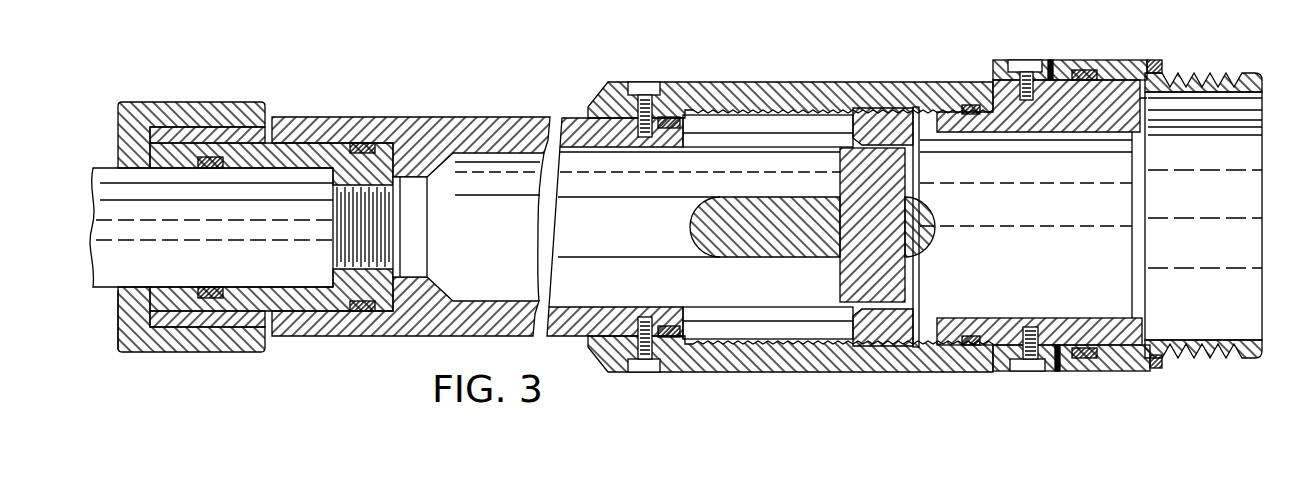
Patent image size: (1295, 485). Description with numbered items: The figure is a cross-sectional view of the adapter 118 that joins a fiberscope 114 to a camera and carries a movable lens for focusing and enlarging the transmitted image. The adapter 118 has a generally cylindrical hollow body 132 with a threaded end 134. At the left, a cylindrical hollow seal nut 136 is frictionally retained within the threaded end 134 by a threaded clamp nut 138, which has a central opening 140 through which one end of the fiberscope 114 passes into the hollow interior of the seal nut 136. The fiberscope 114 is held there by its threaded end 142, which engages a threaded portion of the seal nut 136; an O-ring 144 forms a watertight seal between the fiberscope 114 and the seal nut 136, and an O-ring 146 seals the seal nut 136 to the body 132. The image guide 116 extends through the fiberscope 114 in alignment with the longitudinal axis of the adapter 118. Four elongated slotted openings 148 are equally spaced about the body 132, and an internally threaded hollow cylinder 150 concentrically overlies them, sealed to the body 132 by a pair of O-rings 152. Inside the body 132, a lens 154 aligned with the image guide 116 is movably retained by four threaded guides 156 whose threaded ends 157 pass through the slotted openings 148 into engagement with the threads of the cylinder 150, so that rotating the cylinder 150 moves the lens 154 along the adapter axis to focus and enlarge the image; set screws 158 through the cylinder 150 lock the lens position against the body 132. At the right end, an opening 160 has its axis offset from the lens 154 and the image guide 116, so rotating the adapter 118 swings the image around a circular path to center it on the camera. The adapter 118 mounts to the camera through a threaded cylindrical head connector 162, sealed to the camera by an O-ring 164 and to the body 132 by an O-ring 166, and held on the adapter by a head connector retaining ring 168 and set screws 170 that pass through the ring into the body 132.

The fiberscope 114 is at (104, 178).
The image guide 116 is at (188, 222).
The adapter 118 is at (395, 118).
The body 132 is at (513, 122).
The threaded end 134 is at (170, 132).
The seal nut 136 is at (288, 150).
The clamp nut 138 is at (222, 342).
The central opening 140 is at (118, 290).
The threaded end 142 is at (392, 222).
The O-ring 144 is at (212, 290).
The O-ring 146 is at (371, 310).
The slotted openings 148 is at (712, 123).
The internally threaded hollow cylinder 150 is at (790, 83).
The O-rings 152 is at (667, 128).
The lens 154 is at (897, 277).
The threaded guides 156 is at (873, 112).
The threaded ends 157 is at (907, 108).
The set screws 158 is at (642, 92).
The opening 160 is at (1220, 105).
The head connector 162 is at (1108, 67).
The O-ring 164 is at (1153, 63).
The O-ring 166 is at (1080, 82).
The head connector retaining ring 168 is at (990, 72).
The set screws 170 is at (1026, 65).